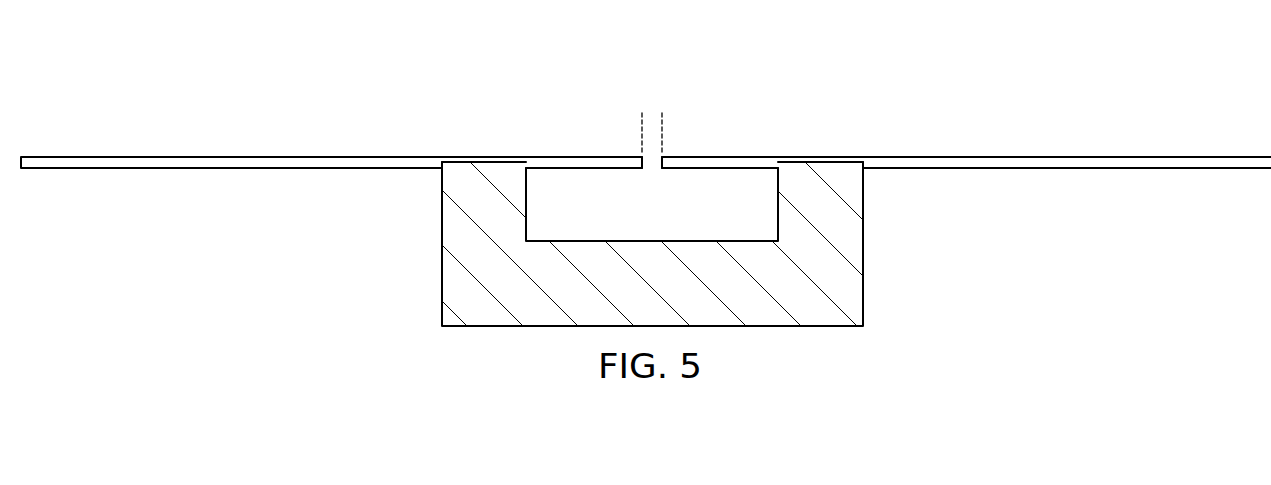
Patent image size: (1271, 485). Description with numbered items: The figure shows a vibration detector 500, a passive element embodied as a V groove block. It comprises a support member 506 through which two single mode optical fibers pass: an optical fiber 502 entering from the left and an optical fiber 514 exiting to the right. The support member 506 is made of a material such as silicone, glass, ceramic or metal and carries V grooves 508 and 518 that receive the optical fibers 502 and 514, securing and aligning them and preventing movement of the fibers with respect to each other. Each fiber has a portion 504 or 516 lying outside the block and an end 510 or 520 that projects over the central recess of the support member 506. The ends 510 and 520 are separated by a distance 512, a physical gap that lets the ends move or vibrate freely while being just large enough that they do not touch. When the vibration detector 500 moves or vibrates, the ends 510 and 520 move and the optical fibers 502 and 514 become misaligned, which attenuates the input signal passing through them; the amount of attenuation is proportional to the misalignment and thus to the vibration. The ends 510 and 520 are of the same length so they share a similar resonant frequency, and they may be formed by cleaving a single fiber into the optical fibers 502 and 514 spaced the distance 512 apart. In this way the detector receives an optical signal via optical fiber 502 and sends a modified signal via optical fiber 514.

The vibration detector 500 is at (760, 76).
The optical fiber 502 is at (285, 149).
The portion 504 is at (185, 156).
The support member 506 is at (673, 298).
The V groove 508 is at (465, 158).
The end 510 is at (583, 168).
The distance 512 is at (693, 125).
The optical fiber 514 is at (1019, 149).
The portion 516 is at (1118, 157).
The V groove 518 is at (803, 158).
The end 520 is at (720, 168).